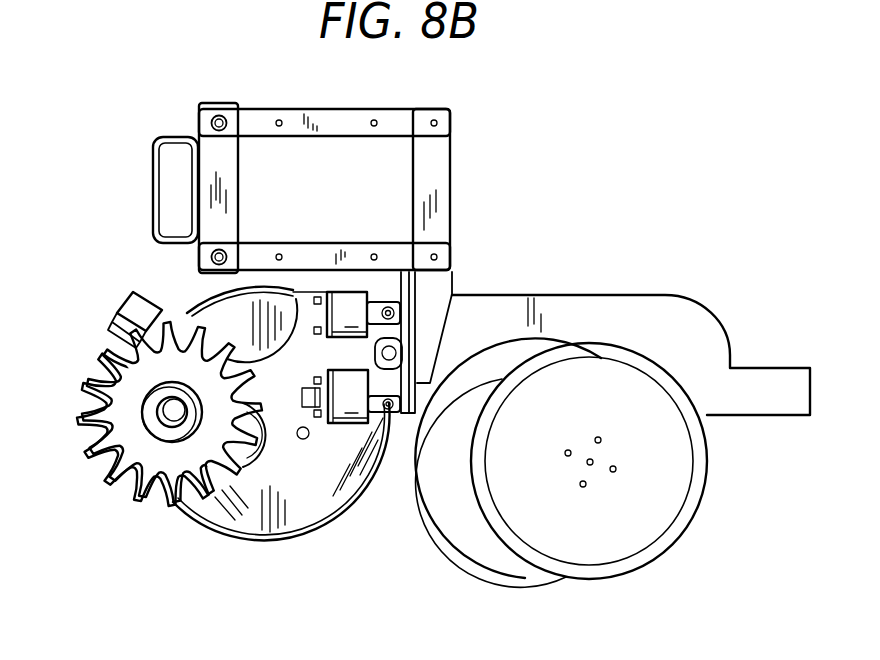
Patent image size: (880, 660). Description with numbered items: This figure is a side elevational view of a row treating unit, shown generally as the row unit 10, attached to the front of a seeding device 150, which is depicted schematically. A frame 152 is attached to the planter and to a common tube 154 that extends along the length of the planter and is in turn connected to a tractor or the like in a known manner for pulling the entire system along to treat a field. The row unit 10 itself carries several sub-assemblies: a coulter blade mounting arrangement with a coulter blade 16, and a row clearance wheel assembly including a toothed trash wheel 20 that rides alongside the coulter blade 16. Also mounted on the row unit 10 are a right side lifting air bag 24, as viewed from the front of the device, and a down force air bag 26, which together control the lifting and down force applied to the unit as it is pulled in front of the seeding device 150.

The row unit 10 is at (125, 287).
The coulter blade 16 is at (295, 518).
The trash wheel 20 is at (125, 476).
The right side lifting air bag 24 is at (357, 403).
The down force air bag 26 is at (343, 308).
The seeding device 150 is at (610, 280).
The frame 152 is at (463, 103).
The common tube 154 is at (150, 141).